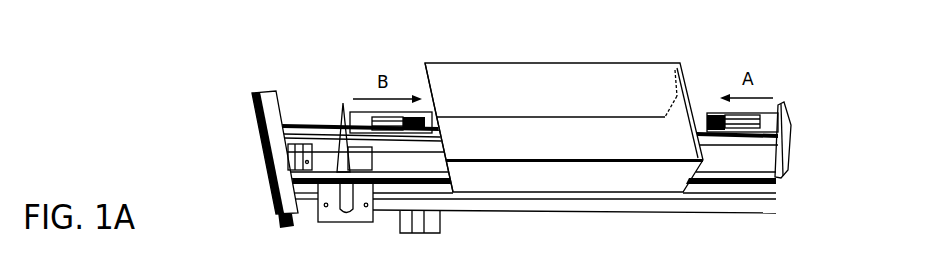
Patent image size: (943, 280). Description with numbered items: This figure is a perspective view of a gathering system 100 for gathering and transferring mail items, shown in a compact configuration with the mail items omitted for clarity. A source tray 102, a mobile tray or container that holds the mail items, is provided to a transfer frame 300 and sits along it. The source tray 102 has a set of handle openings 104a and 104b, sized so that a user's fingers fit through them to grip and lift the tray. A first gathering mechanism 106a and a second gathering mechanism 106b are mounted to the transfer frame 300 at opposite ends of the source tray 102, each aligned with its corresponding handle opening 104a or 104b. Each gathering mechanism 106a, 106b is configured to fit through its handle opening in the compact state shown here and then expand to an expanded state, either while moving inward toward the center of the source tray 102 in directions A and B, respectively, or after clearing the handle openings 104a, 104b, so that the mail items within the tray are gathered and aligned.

The gathering system 100 is at (538, 231).
The source tray 102 is at (664, 180).
The handle opening 104a is at (689, 133).
The handle opening 104b is at (438, 118).
The first gathering mechanism 106a is at (738, 153).
The second gathering mechanism 106b is at (385, 149).
The transfer frame 300 is at (305, 213).